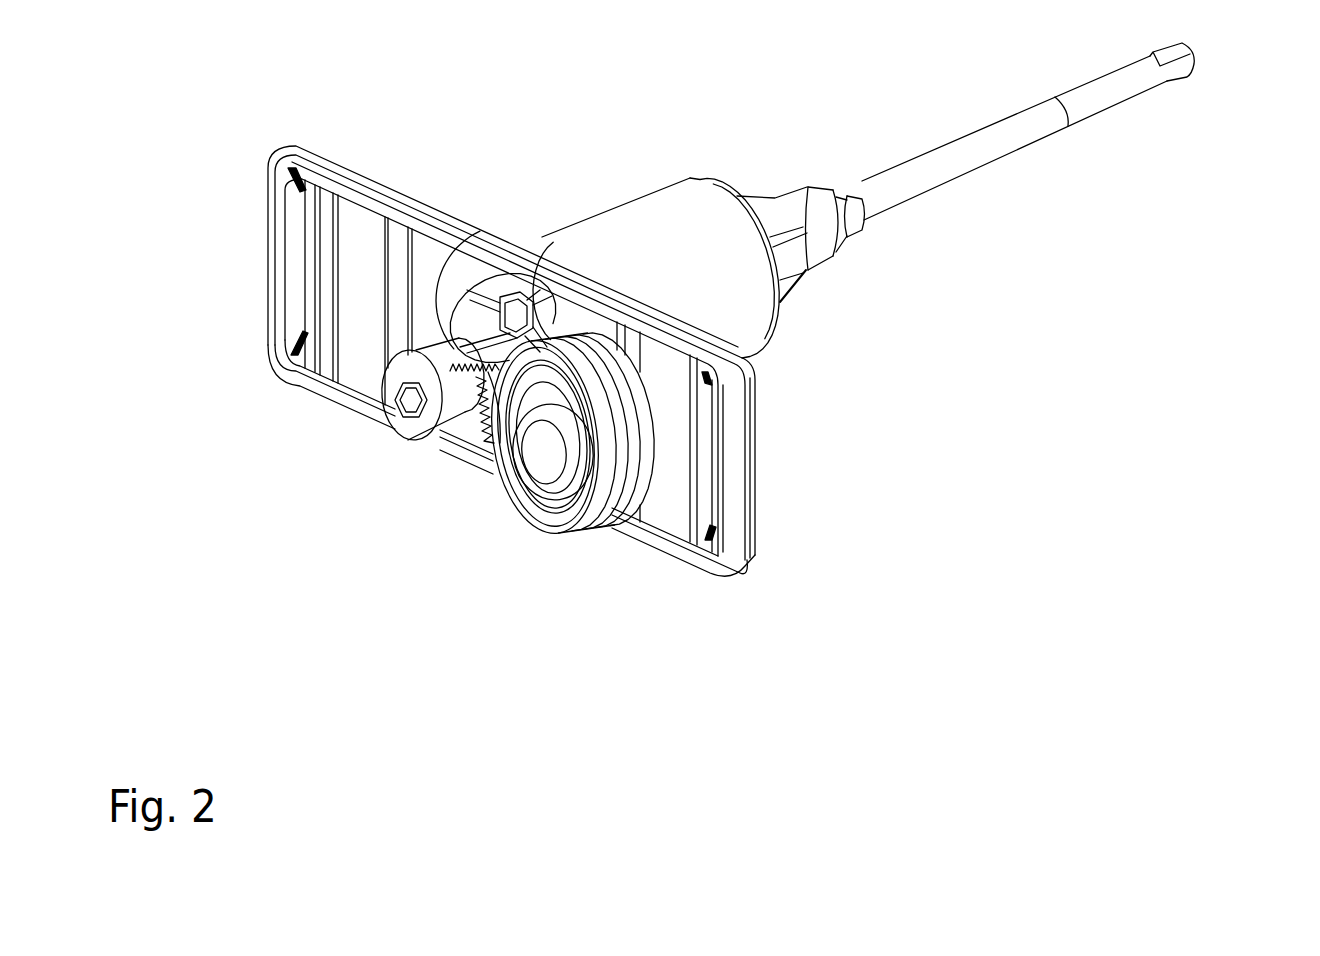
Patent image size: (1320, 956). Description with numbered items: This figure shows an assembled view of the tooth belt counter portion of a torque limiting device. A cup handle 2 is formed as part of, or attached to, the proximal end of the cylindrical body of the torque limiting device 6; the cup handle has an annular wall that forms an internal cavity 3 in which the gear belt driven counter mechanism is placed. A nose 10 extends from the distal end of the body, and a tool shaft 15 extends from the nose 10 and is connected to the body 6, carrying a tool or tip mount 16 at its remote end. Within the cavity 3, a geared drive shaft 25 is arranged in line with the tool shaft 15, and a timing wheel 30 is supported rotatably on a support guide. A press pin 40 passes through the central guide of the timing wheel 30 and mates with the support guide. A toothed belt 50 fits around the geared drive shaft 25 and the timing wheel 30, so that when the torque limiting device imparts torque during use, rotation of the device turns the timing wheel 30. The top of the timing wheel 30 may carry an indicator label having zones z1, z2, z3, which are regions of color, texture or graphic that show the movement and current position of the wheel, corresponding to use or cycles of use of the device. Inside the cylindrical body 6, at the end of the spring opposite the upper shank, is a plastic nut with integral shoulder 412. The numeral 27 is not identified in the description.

The cup handle 2 is at (511, 361).
The internal cavity 3 is at (358, 292).
The body of torque limiting device 6 is at (656, 268).
The nose 10 is at (801, 179).
The tool shaft 15 is at (1014, 161).
The tool or tip mount 16 is at (1229, 95).
The geared drive shaft 25 is at (298, 314).
The hex socket 27 is at (262, 412).
The timing wheel 30 is at (598, 520).
The press pin 40 is at (490, 511).
The toothed belt 50 is at (400, 255).
The plastic nut with integral shoulder 412 is at (496, 215).
The zone z1 is at (801, 458).
The zone z2 is at (579, 606).
The zone z3 is at (377, 490).